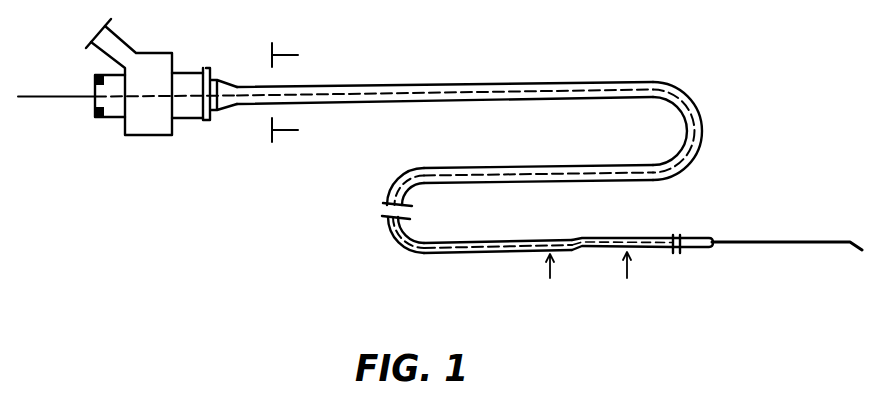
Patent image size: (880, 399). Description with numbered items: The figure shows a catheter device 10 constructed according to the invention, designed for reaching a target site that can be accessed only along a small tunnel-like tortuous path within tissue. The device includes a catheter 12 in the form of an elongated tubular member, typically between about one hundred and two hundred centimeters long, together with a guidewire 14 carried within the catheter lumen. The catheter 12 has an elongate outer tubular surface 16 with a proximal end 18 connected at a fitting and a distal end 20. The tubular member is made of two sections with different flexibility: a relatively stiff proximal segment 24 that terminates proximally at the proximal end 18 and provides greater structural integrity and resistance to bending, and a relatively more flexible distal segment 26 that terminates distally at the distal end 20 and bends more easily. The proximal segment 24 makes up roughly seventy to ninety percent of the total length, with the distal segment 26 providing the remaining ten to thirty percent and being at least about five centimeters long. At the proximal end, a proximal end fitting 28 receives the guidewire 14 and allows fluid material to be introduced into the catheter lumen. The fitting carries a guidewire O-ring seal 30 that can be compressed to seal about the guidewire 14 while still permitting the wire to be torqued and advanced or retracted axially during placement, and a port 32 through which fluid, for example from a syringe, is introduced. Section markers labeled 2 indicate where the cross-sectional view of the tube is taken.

The catheter device 10 is at (741, 177).
The catheter 12 is at (363, 86).
The guidewire 14 is at (770, 241).
The elongate outer tubular surface 16 is at (490, 81).
The proximal end 18 is at (208, 120).
The distal end 20 is at (713, 243).
The proximal segment 24 is at (705, 131).
The distal segment 26 is at (625, 238).
The proximal end fitting 28 is at (190, 73).
The guidewire O-ring seal 30 is at (102, 117).
The port 32 is at (113, 28).
The section line for FIG. 2 is at (451, 173).